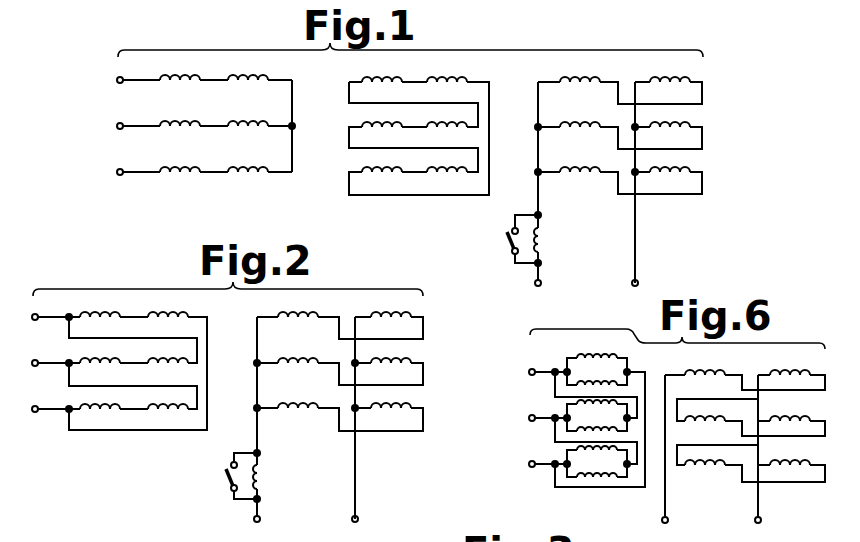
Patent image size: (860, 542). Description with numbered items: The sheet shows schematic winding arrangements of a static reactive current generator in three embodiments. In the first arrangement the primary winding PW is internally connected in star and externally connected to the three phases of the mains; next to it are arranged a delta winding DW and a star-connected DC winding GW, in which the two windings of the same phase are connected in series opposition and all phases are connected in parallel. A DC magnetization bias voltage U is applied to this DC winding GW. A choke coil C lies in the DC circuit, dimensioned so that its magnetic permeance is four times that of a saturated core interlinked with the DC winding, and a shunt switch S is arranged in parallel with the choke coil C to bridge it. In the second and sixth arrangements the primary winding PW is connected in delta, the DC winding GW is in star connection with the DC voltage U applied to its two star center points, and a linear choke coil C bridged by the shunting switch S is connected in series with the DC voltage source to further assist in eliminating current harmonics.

In FIG. 1, the primary winding PW is at (206, 114).
In FIG. 2, the primary winding PW is at (119, 361).
In FIG. 6, the primary winding PW is at (587, 410).
In FIG. 1, the delta winding DW is at (419, 124).
In FIG. 1, the DC winding GW is at (618, 168).
In FIG. 2, the DC winding GW is at (338, 405).
In FIG. 6, the DC winding GW is at (745, 434).
In FIG. 1, the shunt switch S is at (511, 239).
In FIG. 2, the shunt switch S is at (229, 476).
In FIG. 1, the choke coil C is at (548, 239).
In FIG. 2, the choke coil C is at (266, 476).
In FIG. 1, the DC magnetization bias voltage U is at (595, 278).
In FIG. 2, the DC magnetization bias voltage U is at (315, 515).
In FIG. 6, the DC magnetization bias voltage U is at (720, 521).